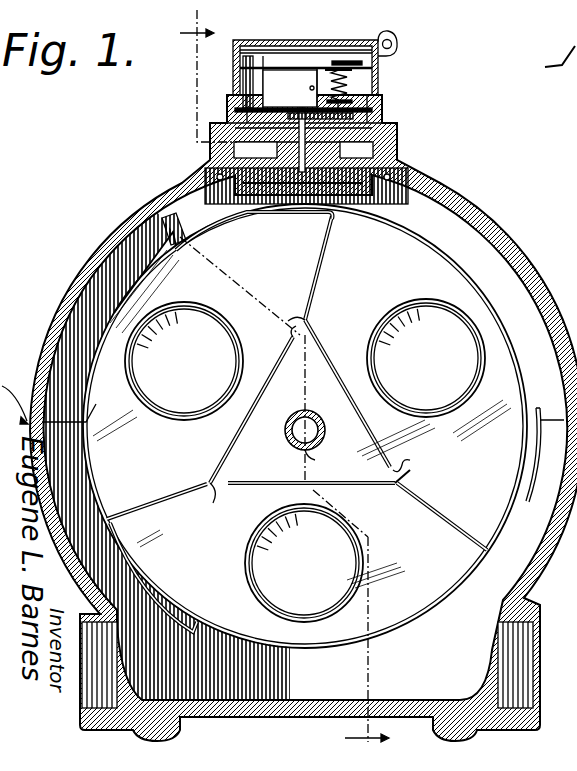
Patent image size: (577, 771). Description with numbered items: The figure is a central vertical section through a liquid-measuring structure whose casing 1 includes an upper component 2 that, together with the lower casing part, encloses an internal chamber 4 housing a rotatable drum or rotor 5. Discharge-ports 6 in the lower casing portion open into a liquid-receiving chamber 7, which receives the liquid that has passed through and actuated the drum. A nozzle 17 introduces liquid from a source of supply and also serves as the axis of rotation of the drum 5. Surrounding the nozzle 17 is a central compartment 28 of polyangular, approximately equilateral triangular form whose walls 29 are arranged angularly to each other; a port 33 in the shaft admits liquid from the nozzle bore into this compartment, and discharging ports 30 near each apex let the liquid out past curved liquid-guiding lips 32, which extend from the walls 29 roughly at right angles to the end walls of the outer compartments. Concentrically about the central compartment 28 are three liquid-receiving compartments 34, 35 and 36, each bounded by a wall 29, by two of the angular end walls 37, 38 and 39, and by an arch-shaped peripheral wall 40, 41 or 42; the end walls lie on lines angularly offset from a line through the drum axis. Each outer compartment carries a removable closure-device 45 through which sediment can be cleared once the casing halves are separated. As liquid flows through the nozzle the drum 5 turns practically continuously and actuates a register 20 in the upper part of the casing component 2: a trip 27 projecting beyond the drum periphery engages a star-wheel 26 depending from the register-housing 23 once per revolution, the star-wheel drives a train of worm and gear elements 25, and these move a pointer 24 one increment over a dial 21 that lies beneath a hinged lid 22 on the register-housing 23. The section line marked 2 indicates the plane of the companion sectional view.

The casing 1 is at (303, 418).
The upper component 2 is at (284, 387).
The internal chamber 4 is at (310, 426).
The drum 5 is at (292, 245).
The discharge-ports 6 is at (82, 630).
The liquid-receiving chamber 7 is at (301, 683).
The nozzle 17 is at (325, 433).
The register 20 is at (382, 99).
The dial 21 is at (289, 72).
The lid 22 is at (280, 40).
The register-housing 23 is at (373, 110).
The pointer 24 is at (343, 61).
The train of worm and gear elements 25 is at (361, 80).
The star-wheel 26 is at (374, 197).
The trip 27 is at (133, 217).
The central compartment 28 is at (316, 352).
The walls 29 is at (233, 436).
The discharging ports 30 is at (294, 327).
The liquid-guiding lips 32 is at (297, 318).
The port 33 is at (322, 462).
The liquid-receiving compartment 34 is at (386, 581).
The liquid-receiving compartment 35 is at (471, 359).
The liquid-receiving compartment 36 is at (128, 478).
The angular wall 37 is at (197, 495).
The angular wall 38 is at (433, 513).
The angular wall 39 is at (323, 266).
The peripheral wall 40 is at (228, 631).
The peripheral wall 41 is at (524, 389).
The peripheral wall 42 is at (62, 405).
The closure-device 45 is at (305, 460).